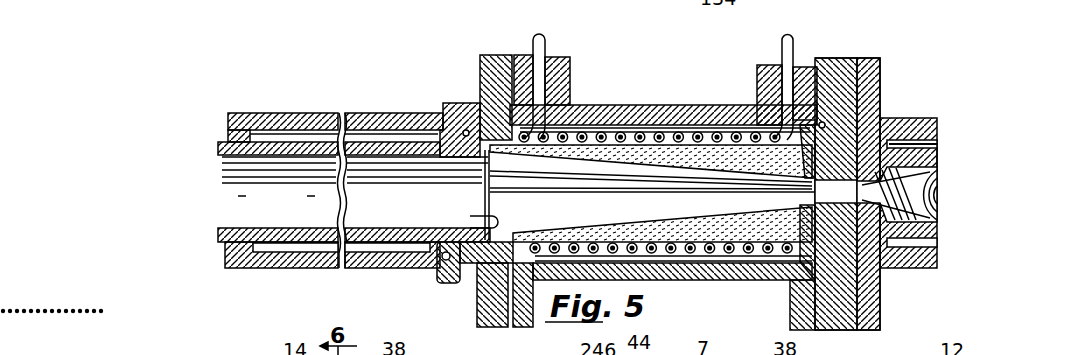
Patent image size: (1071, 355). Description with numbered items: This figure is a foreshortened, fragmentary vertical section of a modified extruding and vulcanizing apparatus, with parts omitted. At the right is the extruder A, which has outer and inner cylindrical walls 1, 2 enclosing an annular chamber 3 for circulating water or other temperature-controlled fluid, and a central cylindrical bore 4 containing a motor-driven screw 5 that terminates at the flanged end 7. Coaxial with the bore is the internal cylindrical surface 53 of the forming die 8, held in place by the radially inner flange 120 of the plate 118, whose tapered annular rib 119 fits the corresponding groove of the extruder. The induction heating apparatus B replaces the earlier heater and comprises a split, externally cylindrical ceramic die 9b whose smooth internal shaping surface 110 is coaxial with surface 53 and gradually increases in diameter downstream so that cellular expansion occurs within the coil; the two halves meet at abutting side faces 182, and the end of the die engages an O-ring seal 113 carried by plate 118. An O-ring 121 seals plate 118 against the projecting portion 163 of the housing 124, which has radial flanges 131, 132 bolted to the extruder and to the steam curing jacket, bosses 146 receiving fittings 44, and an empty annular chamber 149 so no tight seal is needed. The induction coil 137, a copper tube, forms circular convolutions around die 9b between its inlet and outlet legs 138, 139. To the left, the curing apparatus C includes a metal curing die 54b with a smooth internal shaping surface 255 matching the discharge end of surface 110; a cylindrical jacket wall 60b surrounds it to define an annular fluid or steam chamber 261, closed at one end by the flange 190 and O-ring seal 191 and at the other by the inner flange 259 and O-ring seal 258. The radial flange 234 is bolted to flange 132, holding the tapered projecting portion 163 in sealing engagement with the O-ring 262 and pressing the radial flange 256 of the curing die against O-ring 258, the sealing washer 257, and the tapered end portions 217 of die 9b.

The outer cylindrical wall 1 is at (930, 118).
The inner cylindrical wall 2 is at (938, 158).
The annular chamber 3 is at (930, 242).
The central cylindrical bore 4 is at (930, 192).
The motor-driven screw 5 is at (930, 205).
The flanged end 7 is at (872, 58).
The forming die 8 is at (937, 143).
The split ceramic die 9b is at (592, 226).
The fittings 44 is at (547, 60).
The internal cylindrical surface 53 is at (836, 192).
The metal curing die 54b is at (268, 232).
The cylindrical jacket wall 60b is at (362, 113).
The internal shaping surface 110 is at (602, 174).
The O-ring seal 113 is at (662, 224).
The plate 118 is at (840, 58).
The tapered annular rib 119 is at (882, 116).
The radially inner flange 120 is at (651, 161).
The O-ring 121 is at (781, 291).
The housing 124 is at (673, 292).
The radial flange 131 is at (795, 319).
The radial flange 132 is at (516, 327).
The induction coil 137 is at (673, 255).
The inlet leg 138 is at (783, 42).
The outlet leg 139 is at (534, 40).
The bosses 146 is at (571, 74).
The annular chamber 149 is at (690, 116).
The projecting portion 163 is at (480, 100).
The abutting side faces 182 is at (712, 191).
The flange 190 is at (231, 268).
The O-ring seal 191 is at (230, 135).
The tapered end portions 217 is at (484, 215).
The radial flange 234 is at (483, 58).
The internal shaping surface 255 is at (408, 228).
The radial flange 256 is at (482, 168).
The sealing washer 257 is at (482, 186).
The O-ring seal 258 is at (452, 266).
The inner flange 259 is at (440, 263).
The annular fluid or steam chamber 261 is at (320, 250).
The O-ring 262 is at (478, 298).
The extruder A is at (912, 112).
The induction heating apparatus B is at (675, 100).
The curing apparatus C is at (298, 105).